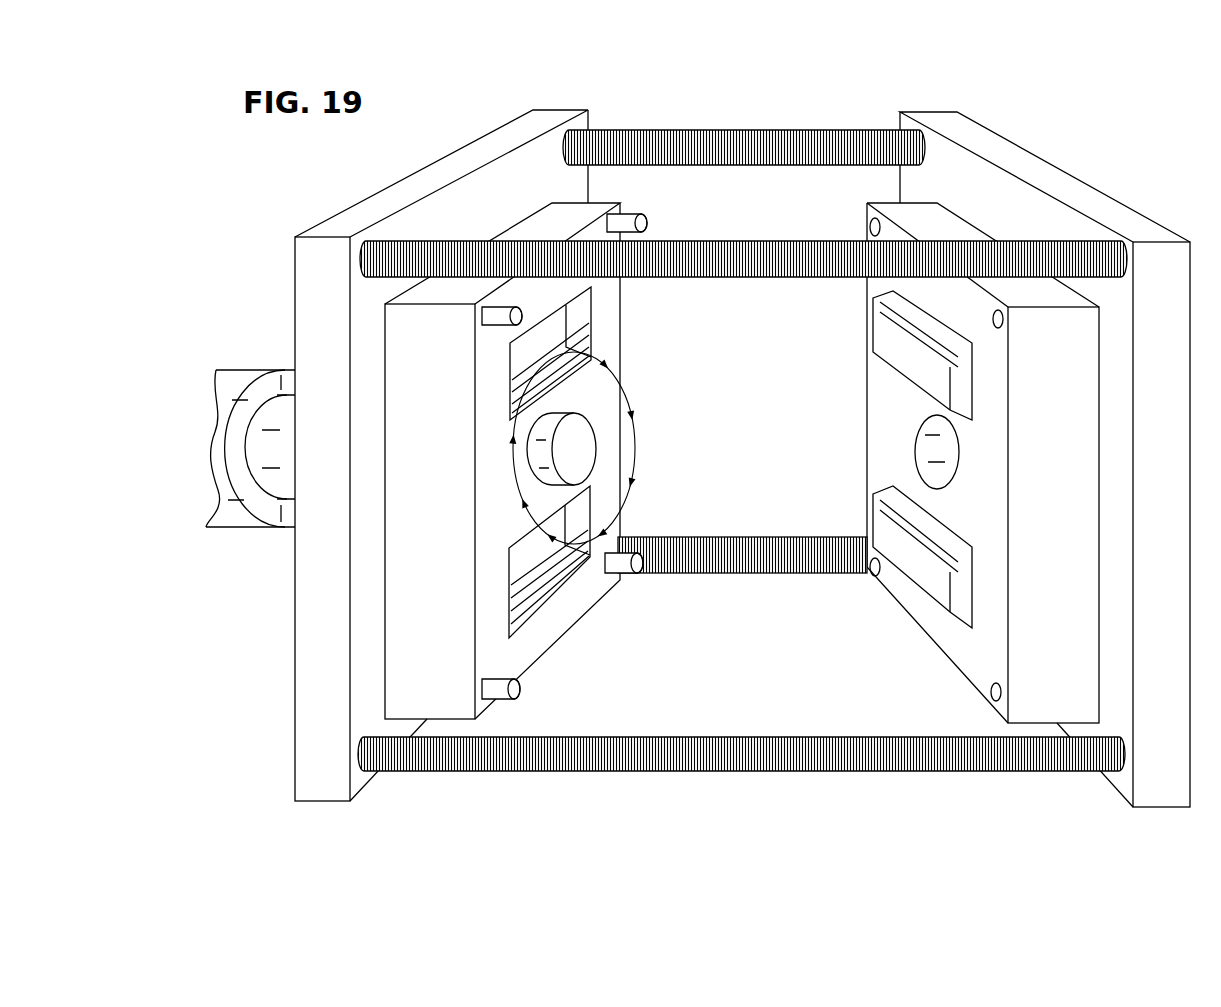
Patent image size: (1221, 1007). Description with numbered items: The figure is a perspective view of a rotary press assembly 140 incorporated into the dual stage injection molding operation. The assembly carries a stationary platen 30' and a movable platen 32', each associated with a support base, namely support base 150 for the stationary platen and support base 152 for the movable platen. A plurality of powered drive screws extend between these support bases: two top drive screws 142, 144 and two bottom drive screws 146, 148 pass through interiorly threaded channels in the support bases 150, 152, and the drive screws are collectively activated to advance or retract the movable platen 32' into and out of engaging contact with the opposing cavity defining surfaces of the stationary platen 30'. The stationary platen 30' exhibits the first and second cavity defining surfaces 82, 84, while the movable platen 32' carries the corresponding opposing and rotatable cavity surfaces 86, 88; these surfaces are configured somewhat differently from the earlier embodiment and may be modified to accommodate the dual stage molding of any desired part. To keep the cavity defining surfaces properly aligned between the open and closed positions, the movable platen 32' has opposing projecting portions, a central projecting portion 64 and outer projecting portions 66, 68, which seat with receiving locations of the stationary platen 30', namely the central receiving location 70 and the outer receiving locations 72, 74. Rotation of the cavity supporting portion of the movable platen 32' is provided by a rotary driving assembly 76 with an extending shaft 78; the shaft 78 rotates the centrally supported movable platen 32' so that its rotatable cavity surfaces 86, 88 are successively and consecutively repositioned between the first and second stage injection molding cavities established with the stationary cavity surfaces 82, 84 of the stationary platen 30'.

The rotary press assembly 140 is at (441, 122).
The support base 152 is at (345, 221).
The support base 150 is at (1004, 153).
The top drive screw 144 is at (747, 130).
The top drive screw 142 is at (757, 241).
The bottom drive screw 148 is at (740, 537).
The bottom drive screw 146 is at (752, 737).
The movable platen 32' is at (502, 461).
The stationary platen 30' is at (983, 463).
The outer projecting portion 66 is at (647, 224).
The outer projecting portion 68 is at (522, 690).
The outer receiving location 72 is at (869, 227).
The outer receiving location 74 is at (990, 692).
The rotatable cavity surface 88 is at (581, 340).
The rotatable cavity surface 86 is at (545, 572).
The central projecting portion 64 is at (565, 442).
The cavity defining surface 84 is at (887, 337).
The cavity defining surface 82 is at (912, 566).
The central receiving location 70 is at (930, 443).
The rotary driving assembly 76 is at (233, 369).
The shaft 78 is at (277, 482).